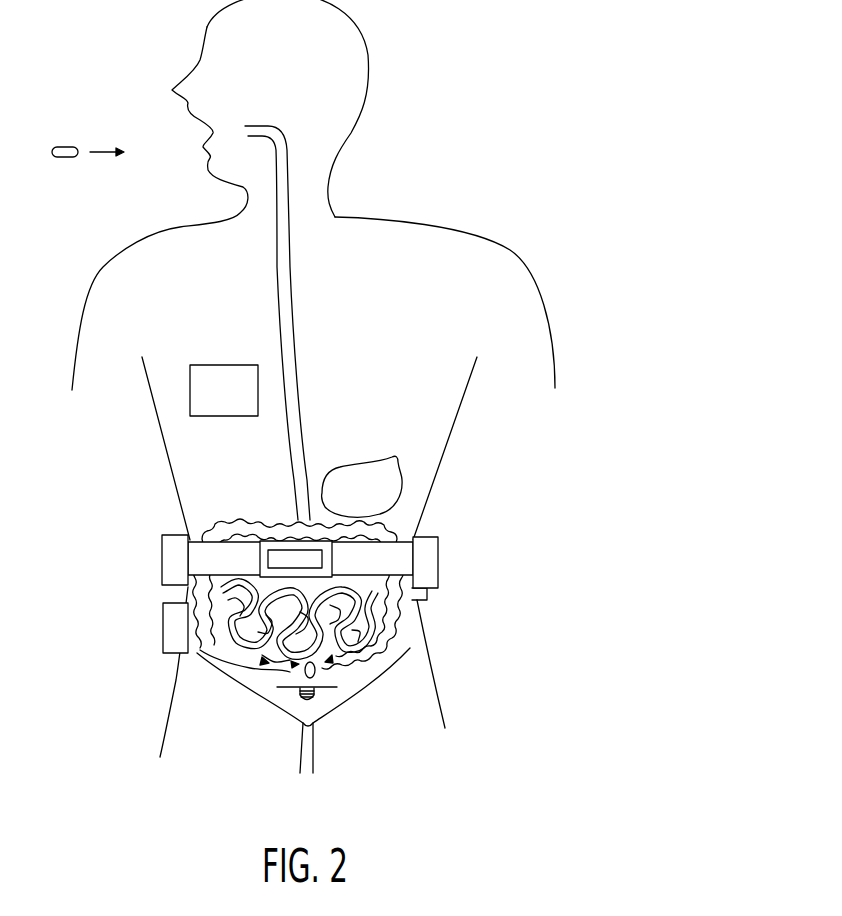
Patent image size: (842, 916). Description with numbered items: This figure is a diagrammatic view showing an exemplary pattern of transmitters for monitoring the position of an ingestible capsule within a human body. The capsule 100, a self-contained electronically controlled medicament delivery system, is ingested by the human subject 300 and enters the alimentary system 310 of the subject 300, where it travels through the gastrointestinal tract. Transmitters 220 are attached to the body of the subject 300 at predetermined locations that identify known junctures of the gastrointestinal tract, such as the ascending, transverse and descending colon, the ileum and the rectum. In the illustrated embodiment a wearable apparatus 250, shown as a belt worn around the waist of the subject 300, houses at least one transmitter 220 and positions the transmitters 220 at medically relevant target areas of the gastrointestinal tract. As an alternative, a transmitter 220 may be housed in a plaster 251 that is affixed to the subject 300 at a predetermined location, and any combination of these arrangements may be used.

The capsule 100 is at (330, 667).
The transmitter 220 is at (162, 540).
The wearable apparatus 250 is at (387, 552).
The plaster 251 is at (240, 392).
The subject 300 is at (370, 53).
The alimentary system 310 is at (282, 190).